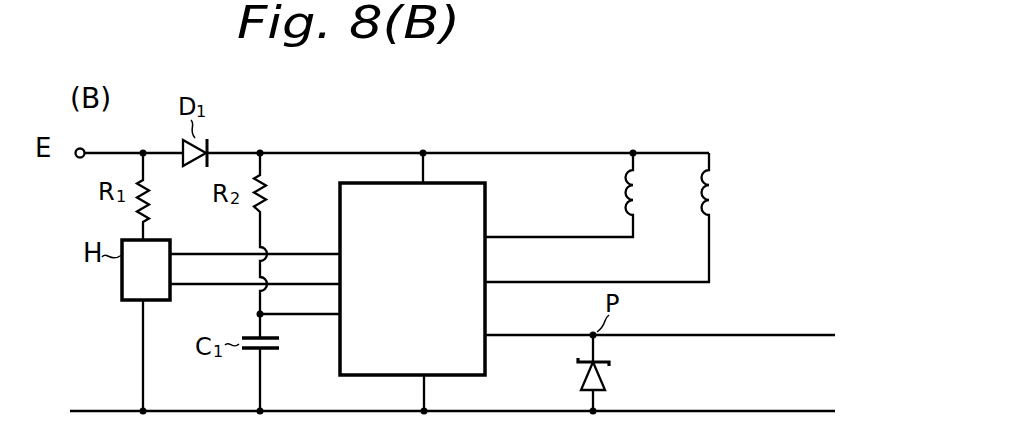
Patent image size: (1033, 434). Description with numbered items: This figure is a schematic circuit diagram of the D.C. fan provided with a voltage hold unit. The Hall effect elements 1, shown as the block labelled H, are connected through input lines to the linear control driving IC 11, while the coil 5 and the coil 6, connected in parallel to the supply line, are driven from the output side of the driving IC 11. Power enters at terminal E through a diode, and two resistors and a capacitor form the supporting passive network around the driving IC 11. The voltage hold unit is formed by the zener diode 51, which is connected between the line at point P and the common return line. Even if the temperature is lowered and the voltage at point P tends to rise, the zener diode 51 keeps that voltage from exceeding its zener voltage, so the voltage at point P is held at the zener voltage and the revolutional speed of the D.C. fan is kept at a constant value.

The Hall effect elements 1 is at (157, 240).
The coil 5 is at (643, 209).
The coil 6 is at (726, 209).
The linear control driving IC 11 is at (485, 213).
The zener diode 51 is at (612, 378).